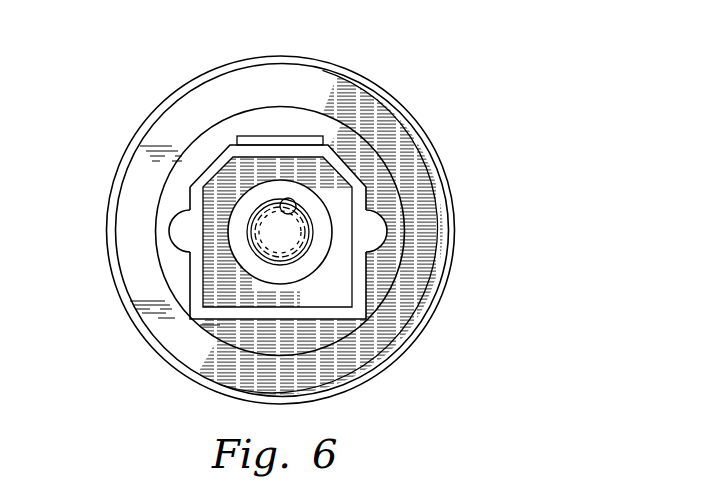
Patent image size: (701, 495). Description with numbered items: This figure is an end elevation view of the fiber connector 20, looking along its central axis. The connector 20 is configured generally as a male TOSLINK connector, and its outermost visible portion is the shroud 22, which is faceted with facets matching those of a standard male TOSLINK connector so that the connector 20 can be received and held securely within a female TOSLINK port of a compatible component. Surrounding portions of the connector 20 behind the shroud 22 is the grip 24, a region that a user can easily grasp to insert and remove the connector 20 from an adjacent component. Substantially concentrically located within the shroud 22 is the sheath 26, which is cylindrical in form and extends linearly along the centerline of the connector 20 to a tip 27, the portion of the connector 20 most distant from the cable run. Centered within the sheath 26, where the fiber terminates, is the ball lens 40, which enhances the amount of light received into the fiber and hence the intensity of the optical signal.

The fiber connector 20 is at (420, 92).
The shroud 22 is at (397, 268).
The grip 24 is at (453, 195).
The sheath 26 is at (248, 201).
The tip 27 is at (295, 204).
The ball lens 40 is at (292, 237).